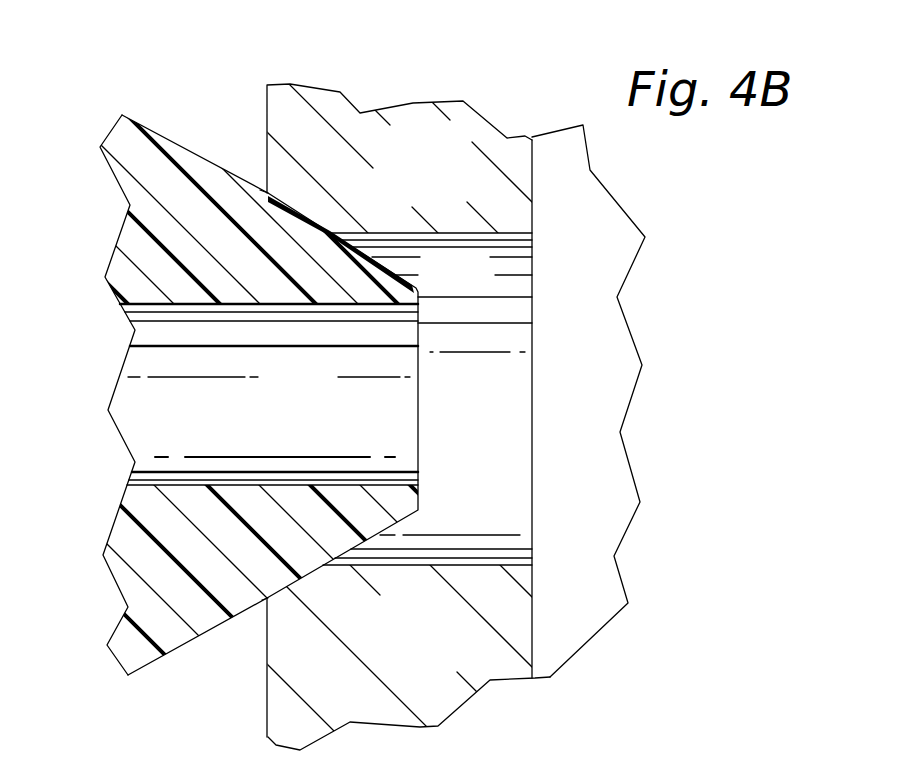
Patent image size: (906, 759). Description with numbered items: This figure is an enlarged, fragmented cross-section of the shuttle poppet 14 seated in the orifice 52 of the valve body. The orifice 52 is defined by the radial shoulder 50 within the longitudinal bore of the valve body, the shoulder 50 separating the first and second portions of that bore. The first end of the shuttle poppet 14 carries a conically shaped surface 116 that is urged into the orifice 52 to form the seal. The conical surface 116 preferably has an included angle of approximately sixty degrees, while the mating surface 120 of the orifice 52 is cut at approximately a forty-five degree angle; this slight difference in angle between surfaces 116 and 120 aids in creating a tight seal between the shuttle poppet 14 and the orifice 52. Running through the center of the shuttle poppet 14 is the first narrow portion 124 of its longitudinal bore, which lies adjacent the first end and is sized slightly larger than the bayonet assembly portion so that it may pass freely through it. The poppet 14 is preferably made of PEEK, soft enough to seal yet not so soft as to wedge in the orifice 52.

The shuttle poppet 14 is at (175, 541).
The radial shoulder 50 is at (432, 176).
The orifice 52 is at (490, 402).
The conically shaped surface 116 is at (395, 258).
The mating surface 120 is at (266, 191).
The first narrow portion 124 is at (310, 405).